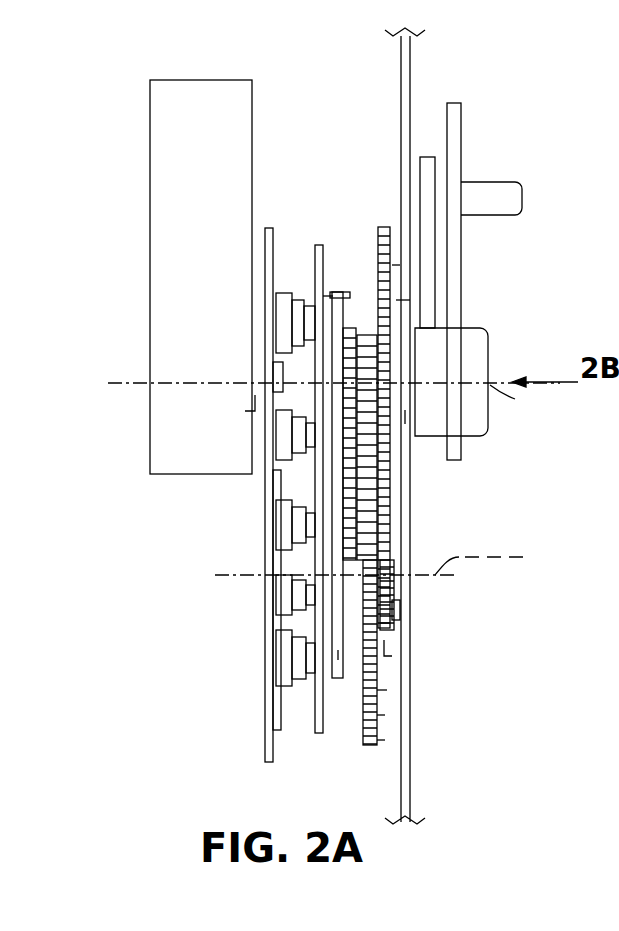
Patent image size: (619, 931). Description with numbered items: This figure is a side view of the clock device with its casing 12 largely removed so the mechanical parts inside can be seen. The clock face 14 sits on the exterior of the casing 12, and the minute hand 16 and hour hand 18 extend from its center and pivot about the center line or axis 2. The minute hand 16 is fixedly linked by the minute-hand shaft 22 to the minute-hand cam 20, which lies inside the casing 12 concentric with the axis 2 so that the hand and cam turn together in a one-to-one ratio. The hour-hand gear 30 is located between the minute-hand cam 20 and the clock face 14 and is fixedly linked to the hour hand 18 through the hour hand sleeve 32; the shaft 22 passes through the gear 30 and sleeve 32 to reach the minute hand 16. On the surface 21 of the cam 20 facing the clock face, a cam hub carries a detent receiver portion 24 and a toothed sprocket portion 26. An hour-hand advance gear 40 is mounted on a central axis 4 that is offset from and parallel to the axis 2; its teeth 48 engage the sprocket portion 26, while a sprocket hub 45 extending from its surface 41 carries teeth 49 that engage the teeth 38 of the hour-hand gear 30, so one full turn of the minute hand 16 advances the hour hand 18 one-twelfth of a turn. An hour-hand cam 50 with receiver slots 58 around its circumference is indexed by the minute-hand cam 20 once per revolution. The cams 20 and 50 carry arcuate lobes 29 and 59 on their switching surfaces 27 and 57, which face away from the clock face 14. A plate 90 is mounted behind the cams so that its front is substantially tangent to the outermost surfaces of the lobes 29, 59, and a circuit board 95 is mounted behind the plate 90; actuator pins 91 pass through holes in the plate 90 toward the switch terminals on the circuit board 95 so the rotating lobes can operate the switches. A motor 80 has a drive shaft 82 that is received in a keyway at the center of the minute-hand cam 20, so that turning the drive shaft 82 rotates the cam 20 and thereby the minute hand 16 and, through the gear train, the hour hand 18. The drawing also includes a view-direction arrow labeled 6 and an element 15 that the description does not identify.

The axis of rotation 2 is at (515, 400).
The central axis 4 is at (382, 564).
The section line 6 is at (100, 383).
The casing 12 is at (404, 598).
The clock face 14 is at (412, 518).
The bearing 15 is at (407, 420).
The minute hand 16 is at (461, 103).
The hour hand 18 is at (415, 160).
The minute-hand cam 20 is at (318, 248).
The surface of the cam 21 is at (338, 292).
The minute-hand shaft 22 is at (470, 353).
The detent receiver portion 24 is at (348, 328).
The sprocket portion 26 is at (364, 335).
The switching surface 27 is at (308, 370).
The arcuate lobes 29 is at (288, 315).
The hour-hand gear 30 is at (395, 266).
The hour hand sleeve 32 is at (402, 303).
The teeth 38 is at (384, 228).
The hour-hand advance gear 40 is at (376, 706).
The surface of the gear 41 is at (376, 728).
The sprocket hub 45 is at (396, 630).
The teeth 48 is at (370, 745).
The teeth 49 is at (386, 656).
The hour-hand cam 50 is at (376, 674).
The switching surface 57 is at (300, 507).
The receiver slots 58 is at (333, 636).
The arcuate lobes 59 is at (316, 555).
The motor 80 is at (150, 128).
The drive shaft 82 is at (260, 390).
The plate 90 is at (318, 733).
The actuator pins 91 is at (330, 296).
The circuit board 95 is at (272, 495).